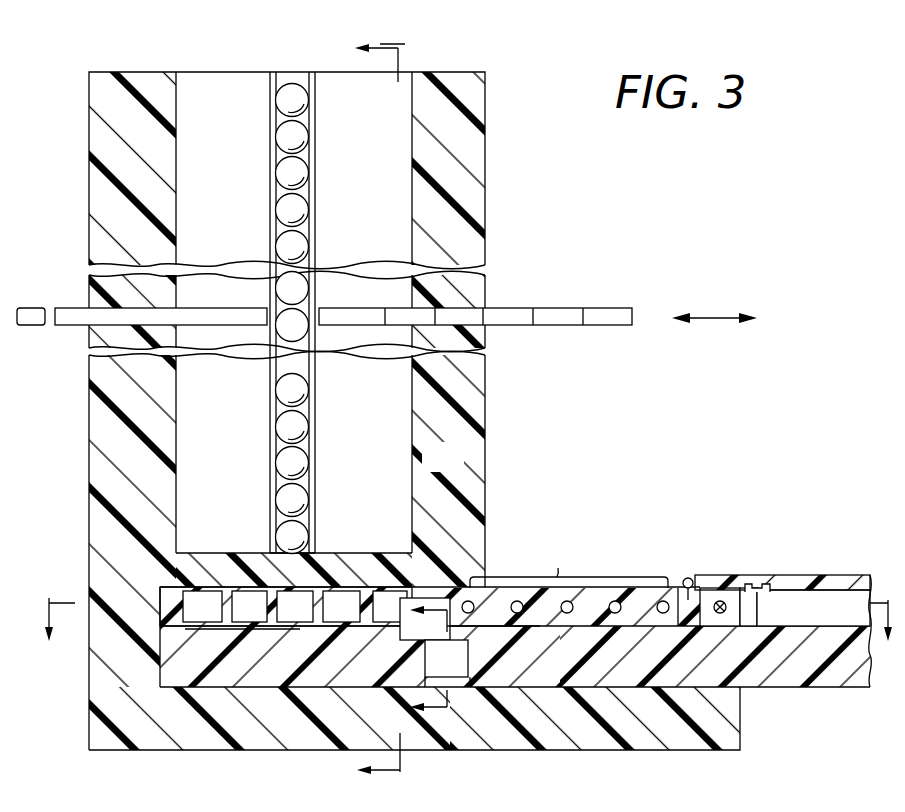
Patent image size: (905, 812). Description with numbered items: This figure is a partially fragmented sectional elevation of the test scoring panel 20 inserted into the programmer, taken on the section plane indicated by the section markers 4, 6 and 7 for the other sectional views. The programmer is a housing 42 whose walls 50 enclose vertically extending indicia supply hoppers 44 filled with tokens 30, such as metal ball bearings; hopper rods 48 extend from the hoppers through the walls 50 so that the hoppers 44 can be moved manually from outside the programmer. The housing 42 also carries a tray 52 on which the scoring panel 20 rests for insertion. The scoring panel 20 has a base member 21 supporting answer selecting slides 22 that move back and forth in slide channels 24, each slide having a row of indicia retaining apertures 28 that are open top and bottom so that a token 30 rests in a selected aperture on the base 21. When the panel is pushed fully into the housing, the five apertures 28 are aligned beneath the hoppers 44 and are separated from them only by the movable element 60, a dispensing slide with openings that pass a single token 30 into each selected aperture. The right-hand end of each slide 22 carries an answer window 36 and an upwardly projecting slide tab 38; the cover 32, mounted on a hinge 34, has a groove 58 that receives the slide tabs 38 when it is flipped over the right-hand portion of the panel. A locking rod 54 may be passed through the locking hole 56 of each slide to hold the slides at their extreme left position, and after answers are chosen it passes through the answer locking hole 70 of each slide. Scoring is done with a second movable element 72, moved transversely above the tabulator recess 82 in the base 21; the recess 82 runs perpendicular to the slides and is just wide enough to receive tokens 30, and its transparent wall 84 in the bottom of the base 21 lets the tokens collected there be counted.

The section line 4- 4 is at (367, 411).
The section line 6- 6 is at (468, 635).
The section line 7- 7 is at (415, 657).
The test scoring panel 20 is at (658, 506).
The base member 21 is at (805, 678).
The answer selecting slide 22 is at (678, 597).
The slide channel 24 is at (870, 587).
The aperture 28 is at (300, 630).
The token 30 is at (303, 196).
The cover 32 is at (838, 577).
The hinge 34 is at (688, 578).
The answer window 36 is at (730, 628).
The slide tab 38 is at (757, 582).
The housing 42 is at (462, 470).
The indicia supply hopper 44 is at (272, 133).
The hopper rod 48 is at (72, 312).
The wall 50 is at (100, 186).
The tray 52 is at (722, 741).
The locking rod 54 is at (664, 614).
The locking hole 56 is at (720, 600).
The groove 58 is at (768, 594).
The movable element 60 is at (233, 543).
The answer locking hole 70 is at (556, 584).
The second movable element 72 is at (528, 628).
The recess 82 is at (452, 665).
The transparent wall 84 is at (470, 688).